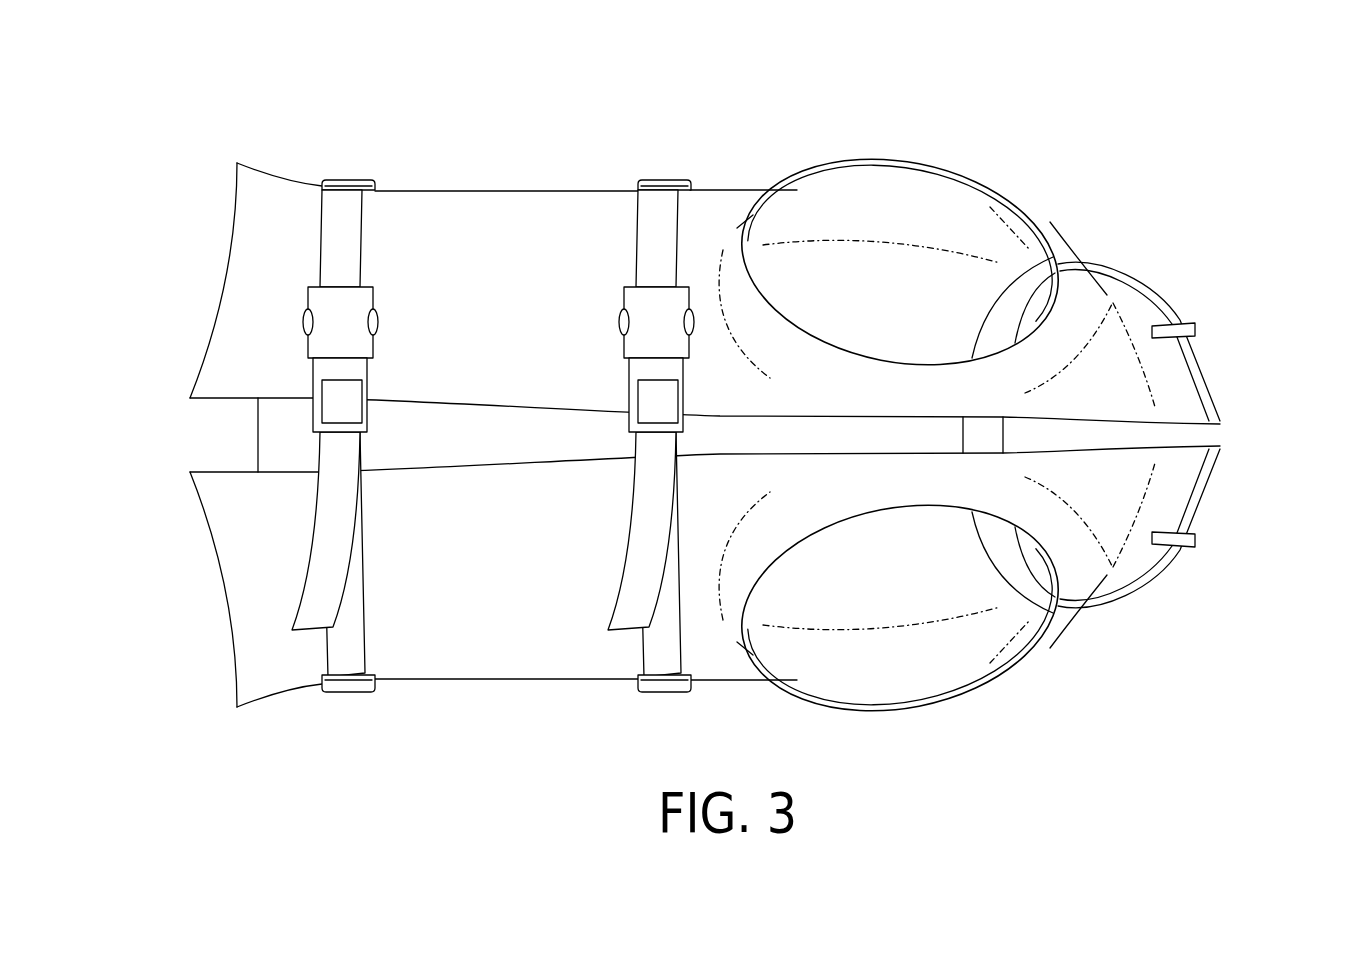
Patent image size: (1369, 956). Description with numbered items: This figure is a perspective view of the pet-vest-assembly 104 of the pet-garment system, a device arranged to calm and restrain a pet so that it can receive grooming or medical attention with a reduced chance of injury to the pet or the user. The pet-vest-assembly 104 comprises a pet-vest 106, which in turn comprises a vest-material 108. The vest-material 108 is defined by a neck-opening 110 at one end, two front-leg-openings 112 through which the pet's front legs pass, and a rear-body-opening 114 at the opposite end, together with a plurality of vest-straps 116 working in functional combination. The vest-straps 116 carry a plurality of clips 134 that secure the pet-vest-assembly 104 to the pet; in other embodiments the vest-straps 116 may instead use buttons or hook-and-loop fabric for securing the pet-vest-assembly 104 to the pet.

The pet-vest-assembly 104 is at (1256, 130).
The pet-vest 106 is at (512, 220).
The vest-material 108 is at (416, 220).
The neck-opening 110 is at (1236, 352).
The front-leg-openings 112 is at (941, 192).
The rear-body-opening 114 is at (170, 424).
The vest-straps 116 is at (338, 200).
The clips 134 is at (333, 337).